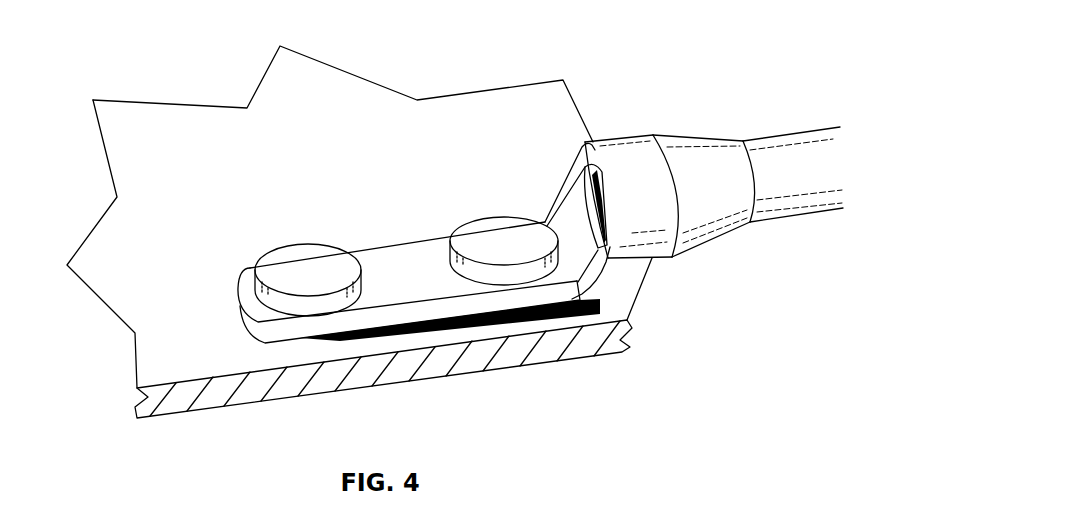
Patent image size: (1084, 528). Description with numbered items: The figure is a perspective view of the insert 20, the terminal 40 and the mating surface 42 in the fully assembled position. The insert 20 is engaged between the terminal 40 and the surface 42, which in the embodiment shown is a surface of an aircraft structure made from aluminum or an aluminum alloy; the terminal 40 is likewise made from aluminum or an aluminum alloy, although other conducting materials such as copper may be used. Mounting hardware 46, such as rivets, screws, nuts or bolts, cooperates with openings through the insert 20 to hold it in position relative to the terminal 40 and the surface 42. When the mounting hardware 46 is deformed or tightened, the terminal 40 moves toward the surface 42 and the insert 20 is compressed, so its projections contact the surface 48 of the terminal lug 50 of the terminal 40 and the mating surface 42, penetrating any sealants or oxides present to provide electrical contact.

The insert 20 is at (510, 335).
The terminal 40 is at (398, 236).
The mating surface 42 is at (160, 268).
The mounting hardware 46 is at (283, 265).
The surface of the terminal lug 48 is at (285, 343).
The terminal lug 50 is at (412, 263).